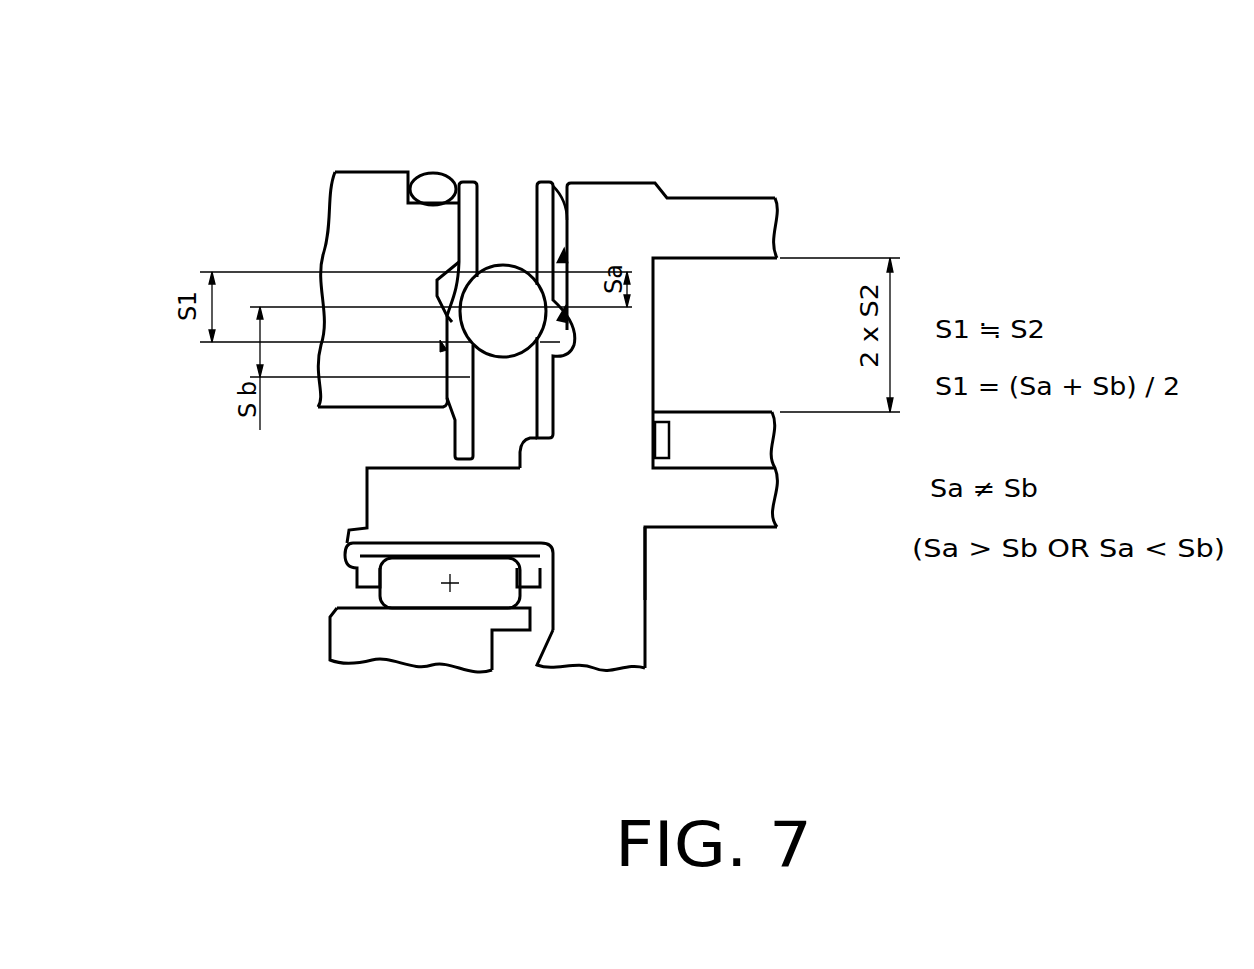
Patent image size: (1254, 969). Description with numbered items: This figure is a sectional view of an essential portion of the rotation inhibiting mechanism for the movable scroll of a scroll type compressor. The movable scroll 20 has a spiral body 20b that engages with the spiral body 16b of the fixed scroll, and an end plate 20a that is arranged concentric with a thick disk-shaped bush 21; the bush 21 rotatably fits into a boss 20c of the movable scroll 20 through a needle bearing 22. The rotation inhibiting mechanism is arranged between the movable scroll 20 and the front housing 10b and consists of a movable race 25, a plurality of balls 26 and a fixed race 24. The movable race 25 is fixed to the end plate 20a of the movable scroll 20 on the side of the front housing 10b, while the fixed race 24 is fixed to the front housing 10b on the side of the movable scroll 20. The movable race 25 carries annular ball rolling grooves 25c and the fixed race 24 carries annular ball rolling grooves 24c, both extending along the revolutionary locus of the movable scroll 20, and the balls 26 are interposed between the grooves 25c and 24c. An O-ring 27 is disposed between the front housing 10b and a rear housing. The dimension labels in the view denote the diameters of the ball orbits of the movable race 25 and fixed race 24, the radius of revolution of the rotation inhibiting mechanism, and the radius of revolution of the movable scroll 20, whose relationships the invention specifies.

The front housing 10b is at (335, 240).
The O-ring 27 is at (432, 173).
The fixed race 24 is at (468, 182).
The ball rolling grooves 24c is at (467, 354).
The balls 26 is at (505, 264).
The movable race 25 is at (545, 182).
The ball rolling grooves 25c is at (560, 207).
The movable scroll 20 is at (624, 183).
The spiral body of fixed scroll 16b is at (750, 448).
The boss 20c is at (376, 510).
The needle bearing 22 is at (395, 593).
The bush 21 is at (418, 648).
The end plate 20a is at (604, 654).
The spiral body of movable scroll 20b is at (703, 515).